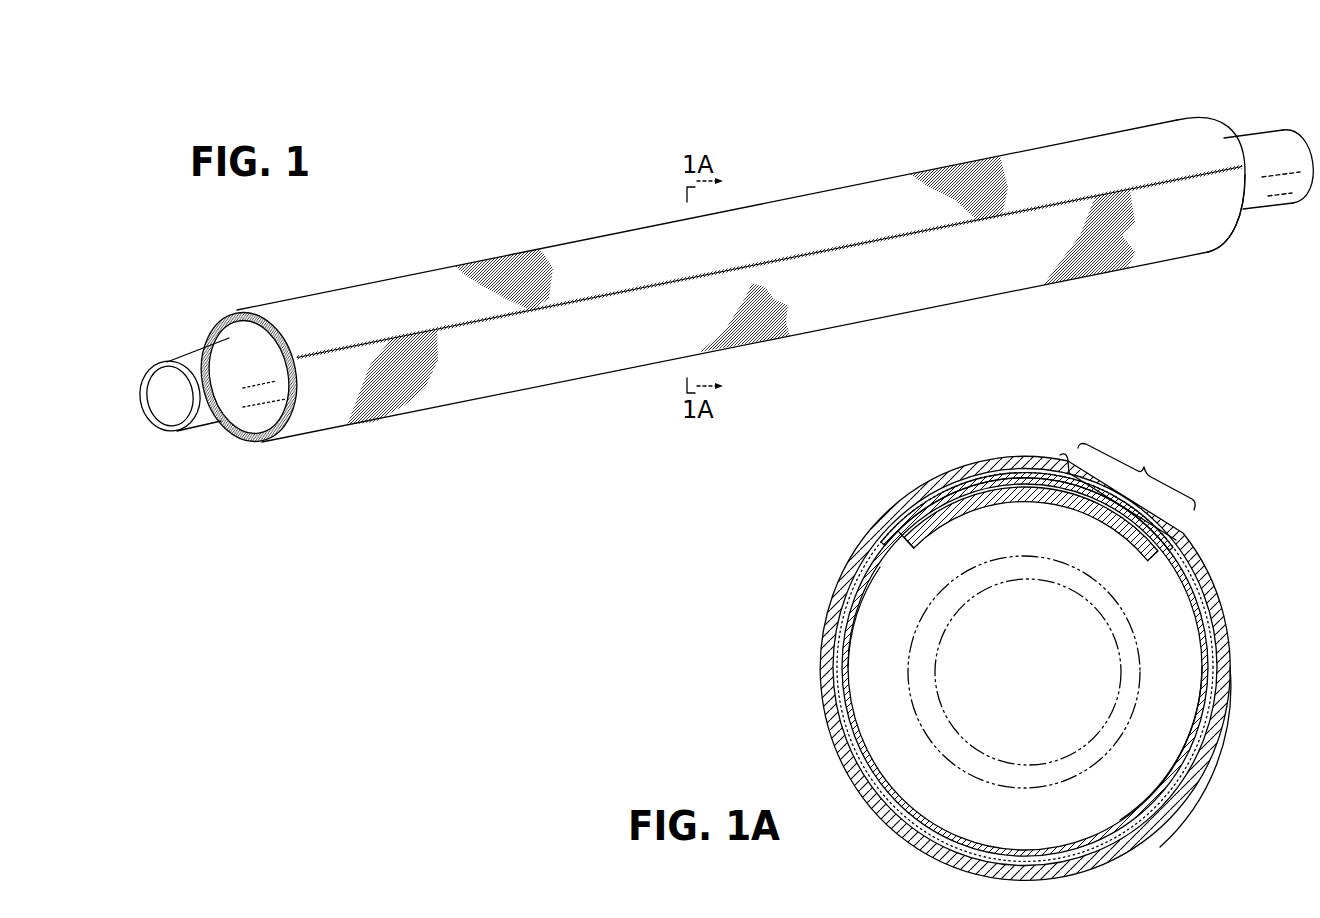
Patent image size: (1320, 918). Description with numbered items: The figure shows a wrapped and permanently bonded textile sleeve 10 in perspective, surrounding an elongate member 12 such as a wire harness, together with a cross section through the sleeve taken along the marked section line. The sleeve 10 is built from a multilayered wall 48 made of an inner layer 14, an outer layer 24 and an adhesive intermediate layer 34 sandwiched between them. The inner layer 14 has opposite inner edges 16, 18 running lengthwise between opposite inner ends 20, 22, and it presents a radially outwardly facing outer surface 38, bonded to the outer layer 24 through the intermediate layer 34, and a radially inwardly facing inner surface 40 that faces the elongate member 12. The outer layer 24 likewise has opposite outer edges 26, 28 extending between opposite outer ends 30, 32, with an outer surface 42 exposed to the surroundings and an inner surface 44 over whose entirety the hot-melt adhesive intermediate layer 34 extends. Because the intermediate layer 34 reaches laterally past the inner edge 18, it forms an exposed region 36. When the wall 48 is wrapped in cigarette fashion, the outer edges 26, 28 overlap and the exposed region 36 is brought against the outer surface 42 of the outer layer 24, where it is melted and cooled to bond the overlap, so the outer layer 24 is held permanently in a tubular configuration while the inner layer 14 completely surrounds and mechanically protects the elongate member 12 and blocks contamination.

In FIG. 1, the textile sleeve 10 is at (724, 272).
In FIG. 1A, the textile sleeve 10 is at (1010, 629).
In FIG. 1, the elongate member 12 is at (180, 356).
In FIG. 1A, the inner layer 14 is at (1024, 672).
In FIG. 1A, the inner edge 16 is at (907, 548).
In FIG. 1A, the inner edge 18 is at (1066, 462).
In FIG. 1, the inner end 20 is at (1222, 128).
In FIG. 1, the inner end 22 is at (248, 346).
In FIG. 1, the outer layer 24 is at (480, 374).
In FIG. 1A, the outer layer 24 is at (1010, 629).
In FIG. 1A, the outer edge 26 is at (880, 567).
In FIG. 1, the outer edge 28 is at (905, 238).
In FIG. 1A, the outer edge 28 is at (1190, 528).
In FIG. 1, the outer end 30 is at (1242, 226).
In FIG. 1, the outer end 32 is at (291, 348).
In FIG. 1A, the adhesive intermediate layer 34 is at (1019, 674).
In FIG. 1A, the exposed region 36 is at (1136, 477).
In FIG. 1A, the outer surface 38 is at (1168, 797).
In FIG. 1A, the inner surface 40 is at (1104, 632).
In FIG. 1A, the outer surface 42 is at (1236, 696).
In FIG. 1A, the inner surface 44 is at (1089, 768).
In FIG. 1, the multilayered wall 48 is at (578, 257).
In FIG. 1A, the multilayered wall 48 is at (835, 597).